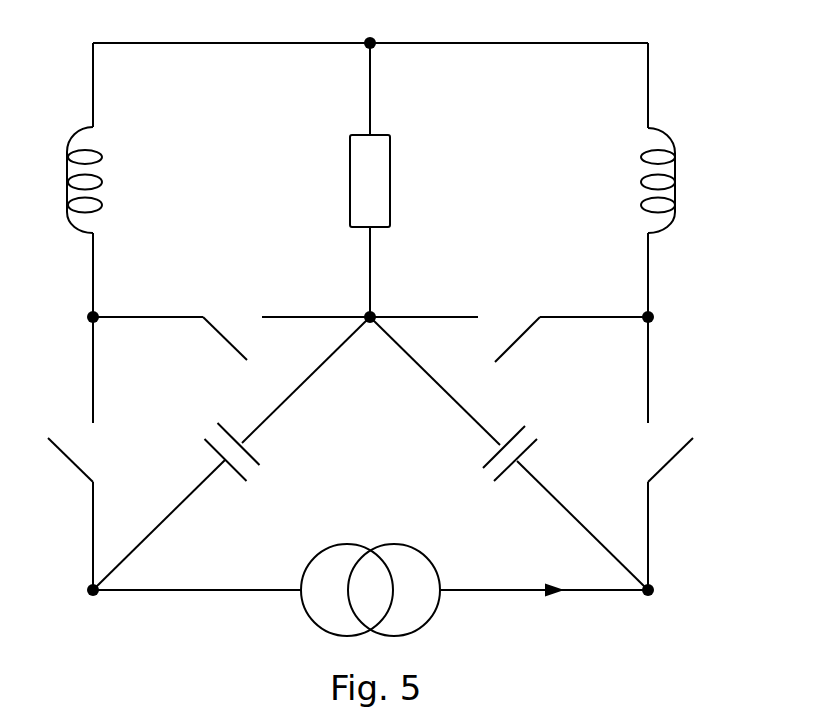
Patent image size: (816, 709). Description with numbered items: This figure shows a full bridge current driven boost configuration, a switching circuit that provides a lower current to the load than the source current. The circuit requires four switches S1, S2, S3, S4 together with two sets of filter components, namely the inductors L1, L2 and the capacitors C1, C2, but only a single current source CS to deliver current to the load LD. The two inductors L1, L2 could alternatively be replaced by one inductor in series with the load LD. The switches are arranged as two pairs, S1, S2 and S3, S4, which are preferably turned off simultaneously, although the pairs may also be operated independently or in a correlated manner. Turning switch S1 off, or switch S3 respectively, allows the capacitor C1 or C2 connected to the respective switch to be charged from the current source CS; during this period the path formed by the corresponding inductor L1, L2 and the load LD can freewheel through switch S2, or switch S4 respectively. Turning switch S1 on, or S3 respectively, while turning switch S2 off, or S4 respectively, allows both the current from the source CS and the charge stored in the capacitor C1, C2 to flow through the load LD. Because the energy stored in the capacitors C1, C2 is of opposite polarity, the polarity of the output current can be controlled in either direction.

The inductor L1 is at (111, 180).
The inductor L2 is at (630, 180).
The load LD is at (370, 157).
The switch S1 is at (100, 511).
The switch S2 is at (231, 314).
The switch S3 is at (642, 511).
The switch S4 is at (509, 315).
The capacitor C1 is at (232, 472).
The capacitor C2 is at (502, 473).
The current source CS is at (422, 597).